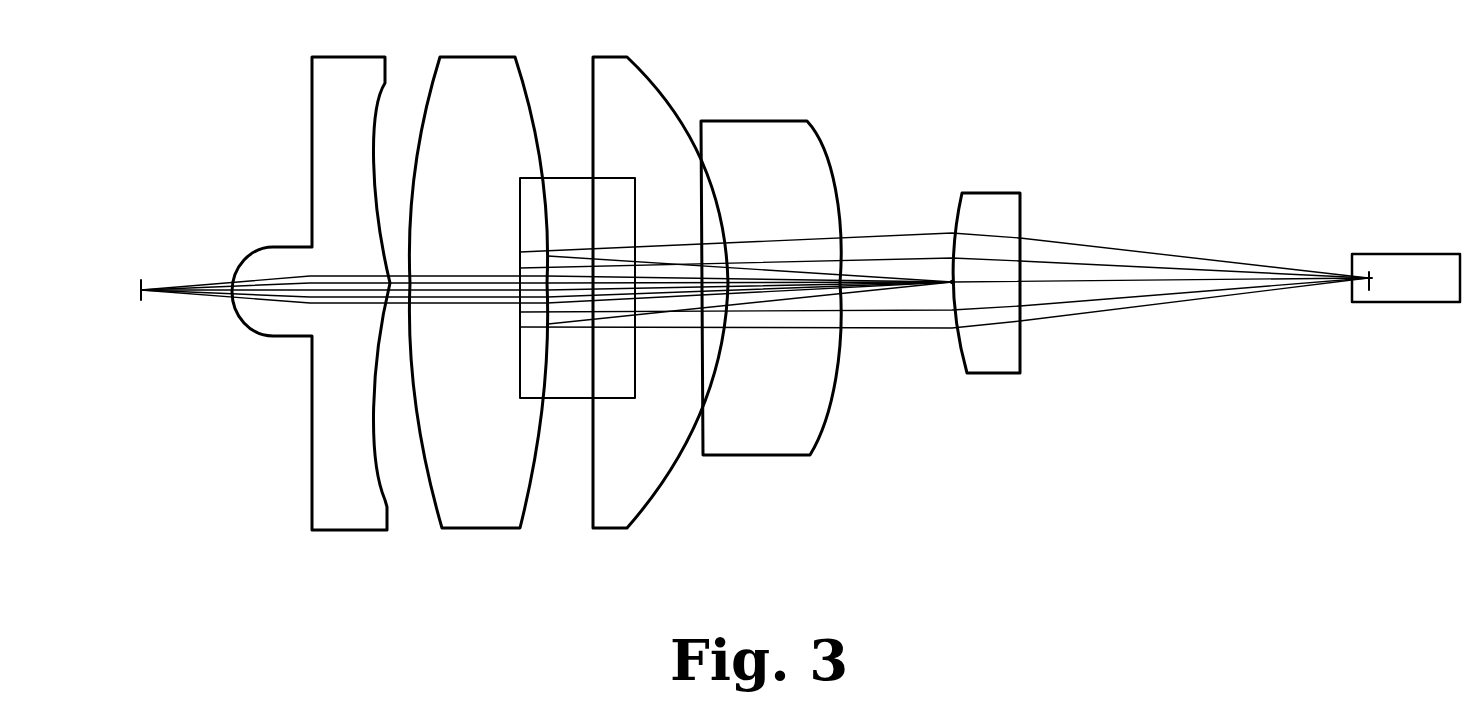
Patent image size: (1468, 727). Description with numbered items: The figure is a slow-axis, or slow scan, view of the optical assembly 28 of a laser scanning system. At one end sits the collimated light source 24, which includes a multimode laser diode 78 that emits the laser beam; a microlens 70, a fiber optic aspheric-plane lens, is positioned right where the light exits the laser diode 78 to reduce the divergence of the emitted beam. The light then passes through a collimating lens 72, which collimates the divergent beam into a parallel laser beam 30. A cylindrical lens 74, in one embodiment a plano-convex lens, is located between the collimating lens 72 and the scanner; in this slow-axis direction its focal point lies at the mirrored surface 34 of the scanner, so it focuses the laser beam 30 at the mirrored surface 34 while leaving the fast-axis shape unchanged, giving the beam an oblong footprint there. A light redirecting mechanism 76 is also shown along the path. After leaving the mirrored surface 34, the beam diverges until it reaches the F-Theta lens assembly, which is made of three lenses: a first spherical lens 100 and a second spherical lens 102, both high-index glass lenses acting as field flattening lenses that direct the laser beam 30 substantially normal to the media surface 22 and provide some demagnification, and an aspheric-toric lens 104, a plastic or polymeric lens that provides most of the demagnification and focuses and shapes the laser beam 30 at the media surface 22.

The media surface 22 is at (143, 297).
The collimated light source 24 is at (1373, 268).
The optical assembly 28 is at (1080, 157).
The laser beam 30 is at (893, 333).
The mirrored surface 34 is at (955, 290).
The microlens 70 is at (1366, 296).
The collimating lens 72 is at (1003, 375).
The cylindrical lens 74 is at (760, 457).
The light redirecting mechanism 76 is at (568, 399).
The multimode laser diode 78 is at (1432, 303).
The first spherical lens 100 is at (620, 518).
The second spherical lens 102 is at (483, 515).
The aspheric-toric lens 104 is at (352, 531).